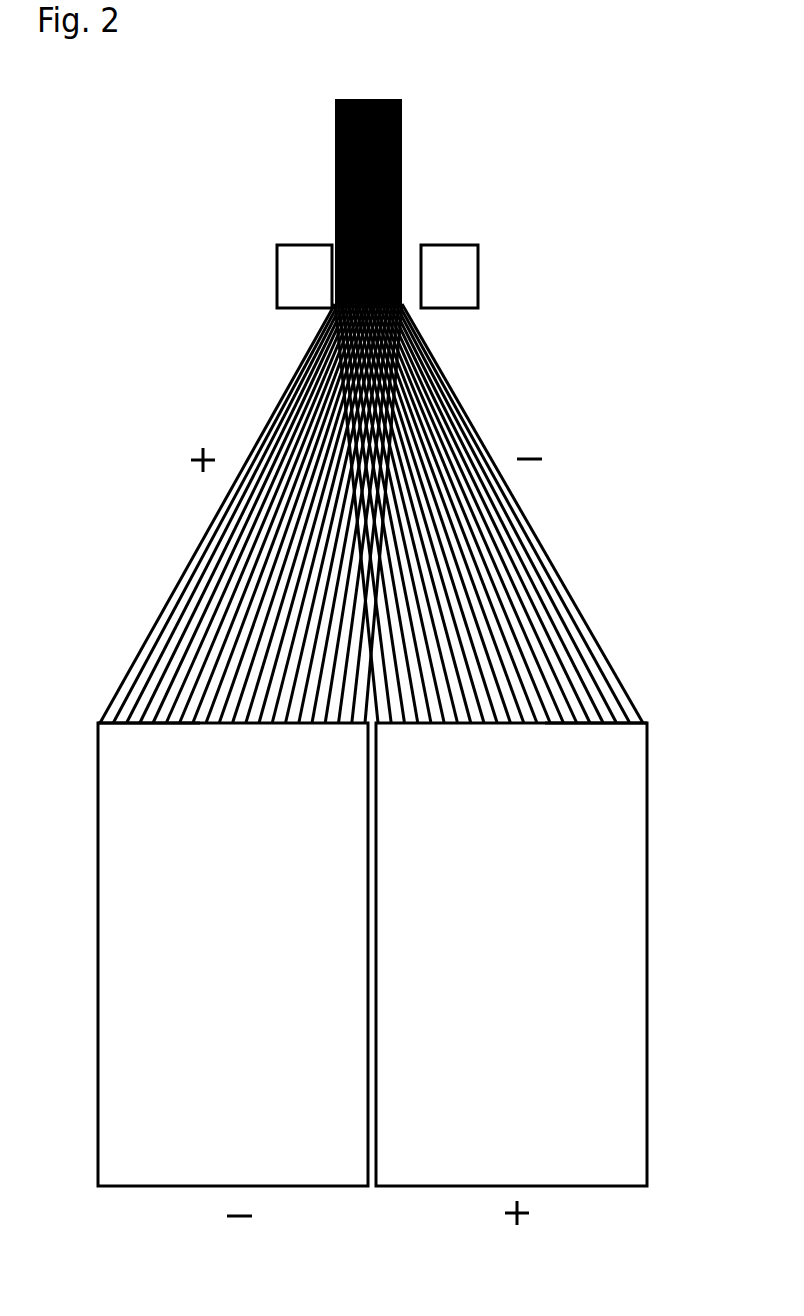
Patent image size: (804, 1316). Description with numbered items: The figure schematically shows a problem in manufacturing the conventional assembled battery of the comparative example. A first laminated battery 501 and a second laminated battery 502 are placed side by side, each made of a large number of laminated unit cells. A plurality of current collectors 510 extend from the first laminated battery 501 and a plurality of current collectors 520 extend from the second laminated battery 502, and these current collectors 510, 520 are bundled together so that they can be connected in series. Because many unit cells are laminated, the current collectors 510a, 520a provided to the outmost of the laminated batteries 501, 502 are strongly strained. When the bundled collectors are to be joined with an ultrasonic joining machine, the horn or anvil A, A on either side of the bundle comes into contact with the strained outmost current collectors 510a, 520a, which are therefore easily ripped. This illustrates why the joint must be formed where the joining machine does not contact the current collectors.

The first laminated battery 501 is at (98, 1187).
The second laminated battery 502 is at (647, 1187).
The current collectors 510 is at (150, 526).
The current collectors 520 is at (587, 526).
The outmost current collector 510a is at (110, 710).
The outmost current collector 520a is at (637, 708).
The horn or anvil A is at (277, 250).